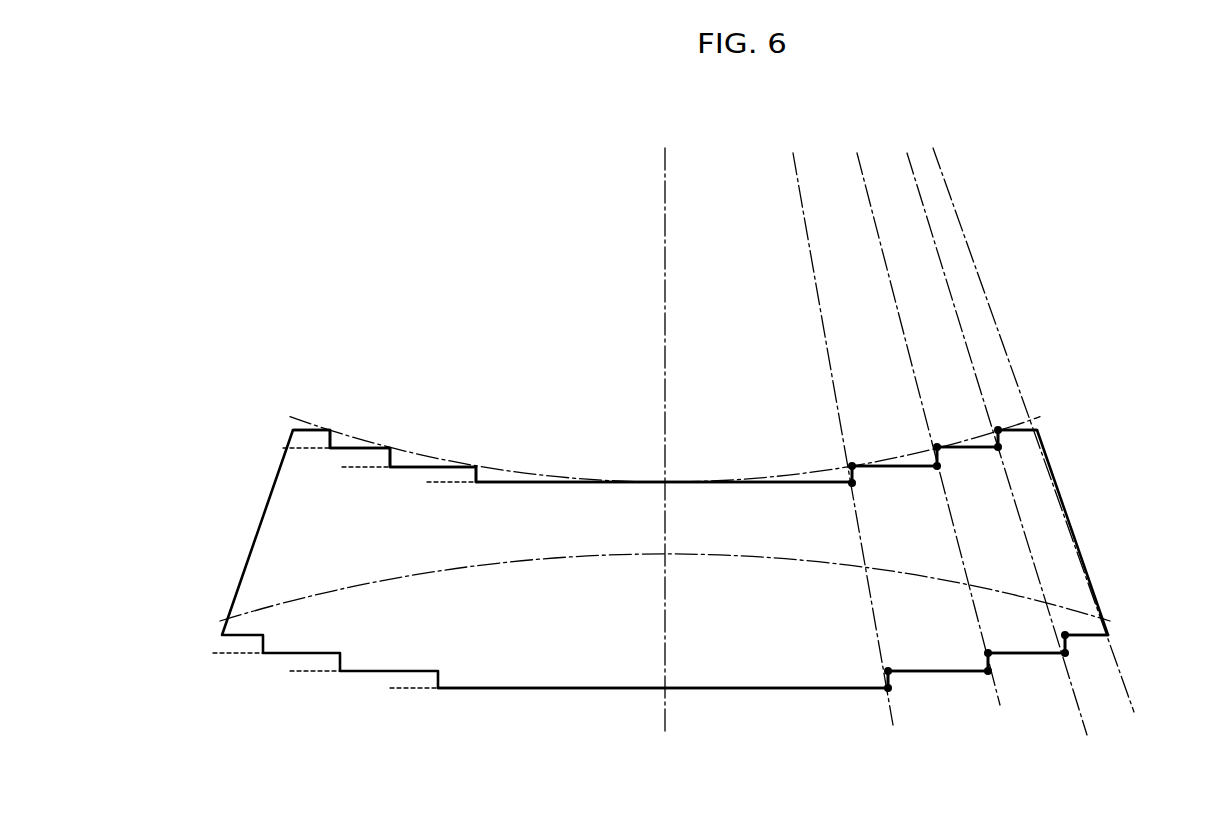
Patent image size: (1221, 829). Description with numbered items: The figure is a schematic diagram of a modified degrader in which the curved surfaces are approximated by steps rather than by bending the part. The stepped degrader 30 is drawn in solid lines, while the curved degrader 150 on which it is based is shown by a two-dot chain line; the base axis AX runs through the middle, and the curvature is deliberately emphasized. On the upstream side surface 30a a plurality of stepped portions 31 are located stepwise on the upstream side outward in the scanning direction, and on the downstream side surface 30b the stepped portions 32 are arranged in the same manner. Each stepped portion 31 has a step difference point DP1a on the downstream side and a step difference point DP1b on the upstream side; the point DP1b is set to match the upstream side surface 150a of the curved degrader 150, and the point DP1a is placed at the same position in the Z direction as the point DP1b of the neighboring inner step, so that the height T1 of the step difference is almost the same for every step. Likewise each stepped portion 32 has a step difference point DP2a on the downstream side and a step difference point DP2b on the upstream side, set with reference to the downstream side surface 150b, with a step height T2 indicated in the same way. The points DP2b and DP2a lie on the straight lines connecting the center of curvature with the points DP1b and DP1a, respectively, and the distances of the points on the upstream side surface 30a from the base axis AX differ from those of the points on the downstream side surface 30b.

The degrader 30 is at (250, 520).
The upstream side surface 30a is at (763, 481).
The downstream side surface 30b is at (527, 690).
The curved degrader 150 is at (352, 428).
The upstream side surface of the curved degrader 150a is at (418, 452).
The downstream side surface of the curved degrader 150b is at (485, 680).
The stepped portion 31 is at (857, 478).
The stepped portion 32 is at (863, 683).
The step difference point on the downstream side DP1a is at (856, 484).
The step difference point on the upstream side DP1b is at (1053, 379).
The step difference point on the downstream side DP2a is at (889, 690).
The step difference point on the upstream side DP2b is at (890, 670).
The base axis AX is at (663, 243).
The height of the step difference T1 is at (303, 410).
The step height on second surface T2 is at (237, 612).